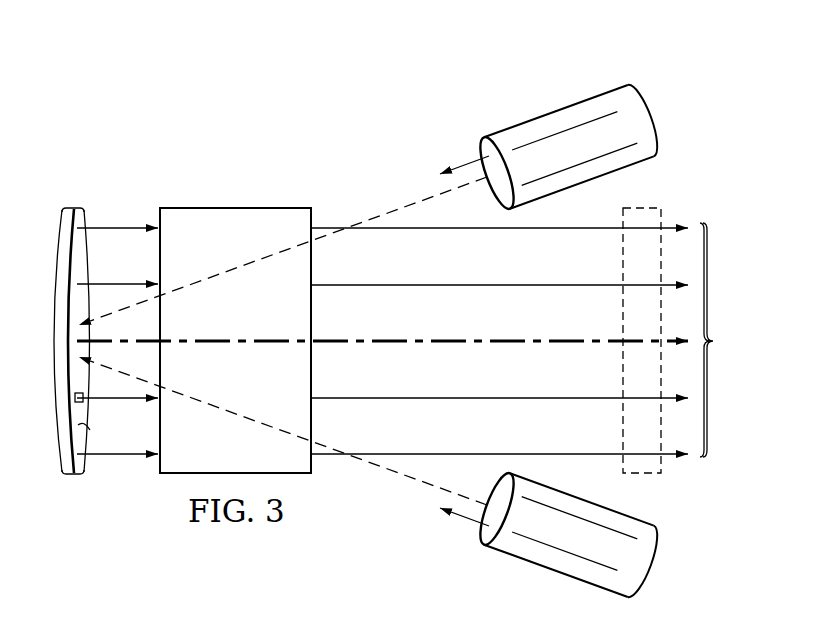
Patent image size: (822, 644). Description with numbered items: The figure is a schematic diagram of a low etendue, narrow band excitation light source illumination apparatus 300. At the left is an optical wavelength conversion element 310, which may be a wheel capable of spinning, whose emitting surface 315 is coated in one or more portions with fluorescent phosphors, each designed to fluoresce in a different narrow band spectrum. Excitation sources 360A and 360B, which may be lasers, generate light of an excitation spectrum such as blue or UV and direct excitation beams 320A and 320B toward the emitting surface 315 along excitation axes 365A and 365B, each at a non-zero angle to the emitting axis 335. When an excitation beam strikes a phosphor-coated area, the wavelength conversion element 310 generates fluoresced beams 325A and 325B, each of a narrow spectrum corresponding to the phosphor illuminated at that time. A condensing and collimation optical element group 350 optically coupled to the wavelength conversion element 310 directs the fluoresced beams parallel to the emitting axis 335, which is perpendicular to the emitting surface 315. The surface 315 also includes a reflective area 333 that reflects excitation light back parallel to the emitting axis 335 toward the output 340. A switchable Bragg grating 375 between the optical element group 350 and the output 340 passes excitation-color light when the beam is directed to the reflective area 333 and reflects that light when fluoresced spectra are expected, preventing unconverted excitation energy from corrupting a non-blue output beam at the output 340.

The illumination apparatus 300 is at (348, 65).
The optical wavelength conversion element 310 is at (66, 207).
The emitting surface 315 is at (78, 425).
The excitation beam 320A is at (461, 165).
The excitation beam 320B is at (461, 515).
The fluoresced beam 325A is at (122, 227).
The fluoresced beam 325B is at (137, 283).
The reflective area 333 is at (76, 402).
The emitting axis 335 is at (468, 337).
The output 340 is at (741, 340).
The condensing and collimation optical element group 350 is at (236, 208).
The excitation source 360A is at (555, 111).
The excitation source 360B is at (553, 571).
The excitation axis 365A is at (410, 204).
The excitation axis 365B is at (410, 478).
The switchable Bragg grating 375 is at (622, 270).